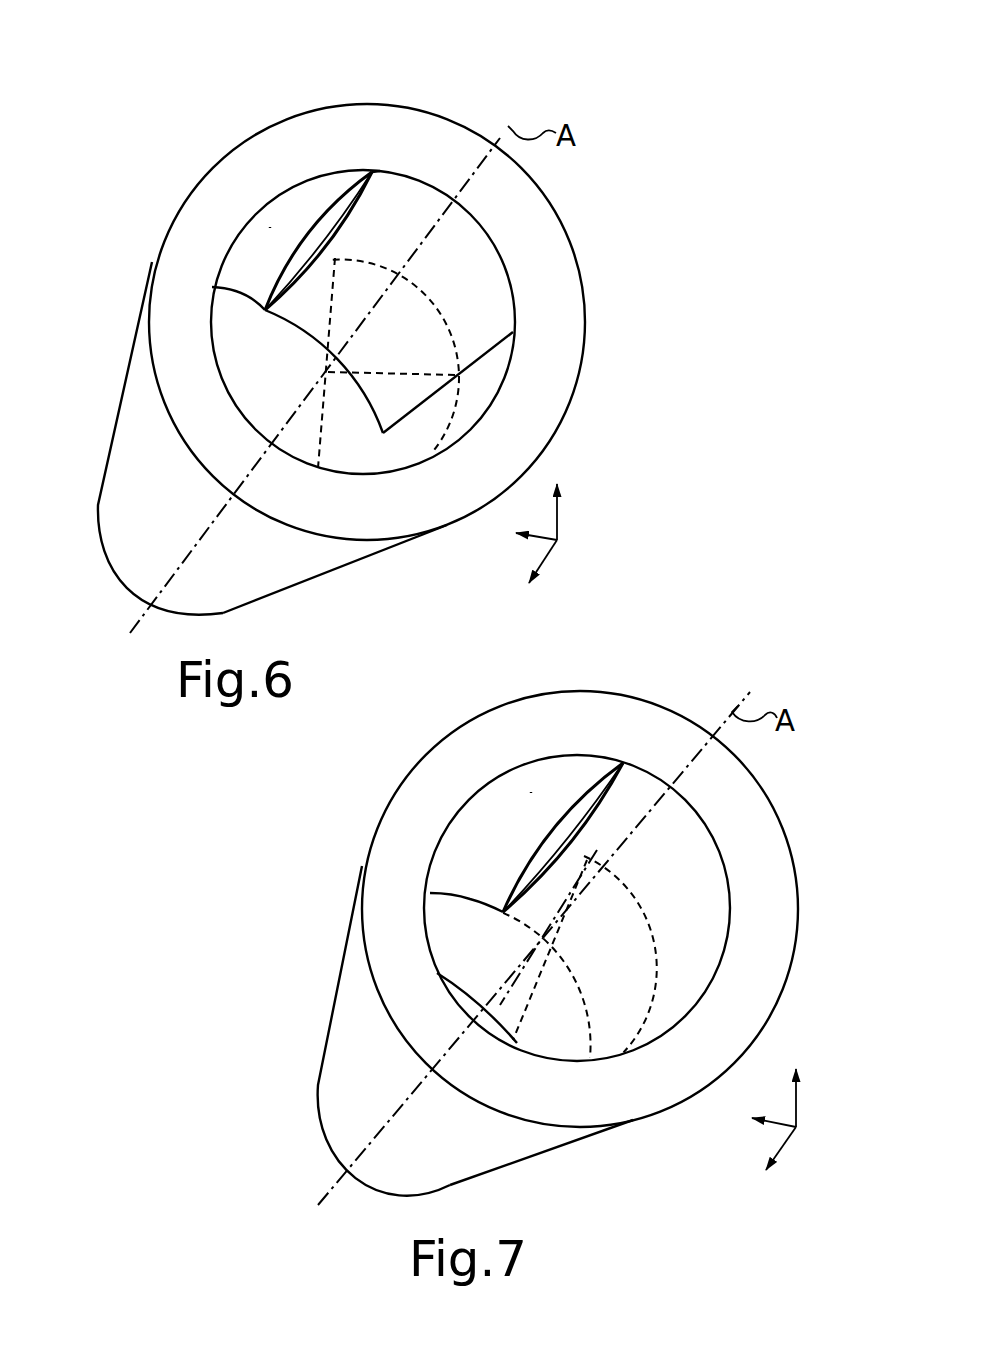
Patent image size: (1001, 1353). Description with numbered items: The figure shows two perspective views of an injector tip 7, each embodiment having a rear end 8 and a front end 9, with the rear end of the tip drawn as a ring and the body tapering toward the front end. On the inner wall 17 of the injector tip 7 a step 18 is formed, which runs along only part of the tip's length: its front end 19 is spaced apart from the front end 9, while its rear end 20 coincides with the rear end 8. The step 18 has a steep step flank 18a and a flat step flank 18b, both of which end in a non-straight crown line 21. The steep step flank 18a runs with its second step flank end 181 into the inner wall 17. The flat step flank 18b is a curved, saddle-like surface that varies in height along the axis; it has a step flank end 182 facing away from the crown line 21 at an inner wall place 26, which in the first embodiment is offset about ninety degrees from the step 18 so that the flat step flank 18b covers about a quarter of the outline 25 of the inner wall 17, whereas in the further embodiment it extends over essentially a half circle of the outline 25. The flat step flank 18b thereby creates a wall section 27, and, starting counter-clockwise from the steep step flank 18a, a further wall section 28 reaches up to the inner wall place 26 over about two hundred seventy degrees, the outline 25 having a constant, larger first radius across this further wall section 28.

In FIG. 6, the injector tip 7 is at (141, 233).
In FIG. 7, the injector tip 7 is at (325, 999).
In FIG. 6, the rear end 8 is at (444, 116).
In FIG. 7, the rear end 8 is at (664, 701).
In FIG. 6, the front end 9 is at (96, 504).
In FIG. 7, the front end 9 is at (316, 1089).
In FIG. 6, the inner wall 17 is at (270, 227).
In FIG. 7, the inner wall 17 is at (531, 792).
In FIG. 6, the step 18 is at (339, 216).
In FIG. 7, the step 18 is at (588, 802).
In FIG. 6, the steep step flank 18a is at (316, 240).
In FIG. 7, the steep step flank 18a is at (575, 823).
In FIG. 6, the flat step flank 18b is at (352, 250).
In FIG. 7, the flat step flank 18b is at (673, 857).
In FIG. 6, the front end of step 19 is at (212, 287).
In FIG. 7, the front end of step 19 is at (430, 893).
In FIG. 6, the rear end of step 20 is at (372, 172).
In FIG. 7, the rear end of step 20 is at (624, 762).
In FIG. 6, the crown line 21 is at (360, 222).
In FIG. 7, the crown line 21 is at (603, 813).
In FIG. 6, the outline 25 is at (473, 430).
In FIG. 7, the outline 25 is at (703, 998).
In FIG. 6, the inner wall place 26 is at (479, 368).
In FIG. 7, the inner wall place 26 is at (509, 1036).
In FIG. 6, the wall section 27 is at (480, 270).
In FIG. 7, the wall section 27 is at (703, 927).
In FIG. 6, the further wall section 28 is at (224, 335).
In FIG. 7, the further wall section 28 is at (488, 820).
In FIG. 6, the second step flank end 181 is at (295, 261).
In FIG. 7, the second step flank end 181 is at (545, 855).
In FIG. 6, the step flank end 182 is at (493, 350).
In FIG. 7, the step flank end 182 is at (517, 1043).